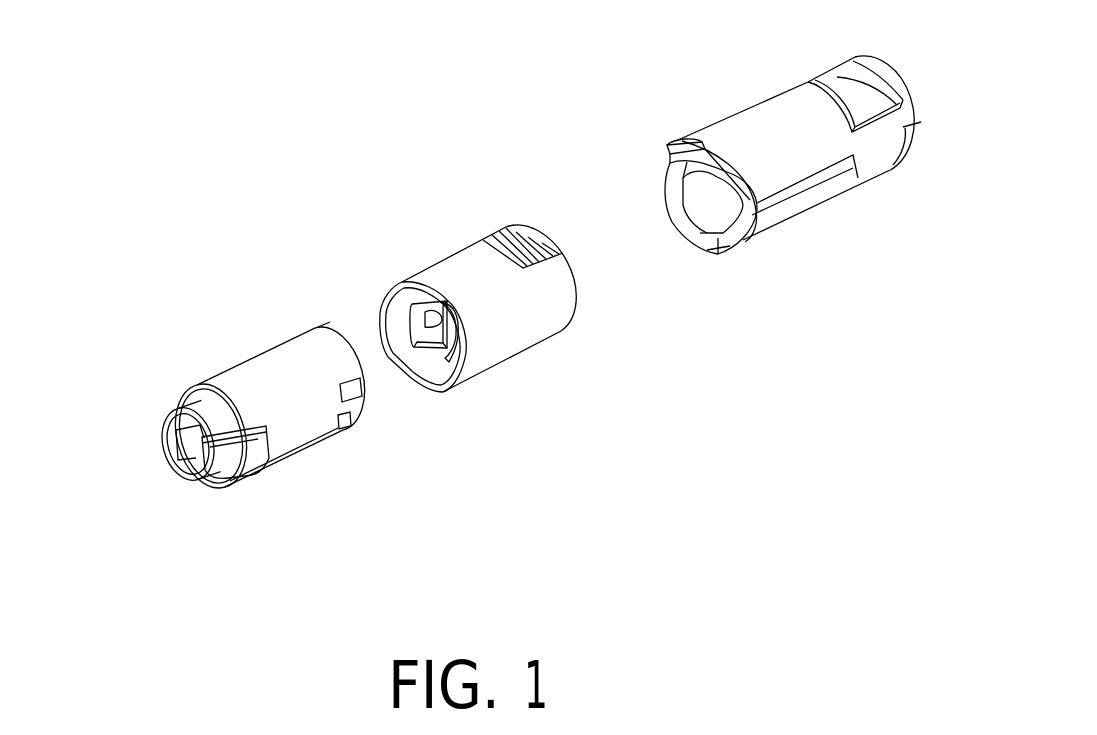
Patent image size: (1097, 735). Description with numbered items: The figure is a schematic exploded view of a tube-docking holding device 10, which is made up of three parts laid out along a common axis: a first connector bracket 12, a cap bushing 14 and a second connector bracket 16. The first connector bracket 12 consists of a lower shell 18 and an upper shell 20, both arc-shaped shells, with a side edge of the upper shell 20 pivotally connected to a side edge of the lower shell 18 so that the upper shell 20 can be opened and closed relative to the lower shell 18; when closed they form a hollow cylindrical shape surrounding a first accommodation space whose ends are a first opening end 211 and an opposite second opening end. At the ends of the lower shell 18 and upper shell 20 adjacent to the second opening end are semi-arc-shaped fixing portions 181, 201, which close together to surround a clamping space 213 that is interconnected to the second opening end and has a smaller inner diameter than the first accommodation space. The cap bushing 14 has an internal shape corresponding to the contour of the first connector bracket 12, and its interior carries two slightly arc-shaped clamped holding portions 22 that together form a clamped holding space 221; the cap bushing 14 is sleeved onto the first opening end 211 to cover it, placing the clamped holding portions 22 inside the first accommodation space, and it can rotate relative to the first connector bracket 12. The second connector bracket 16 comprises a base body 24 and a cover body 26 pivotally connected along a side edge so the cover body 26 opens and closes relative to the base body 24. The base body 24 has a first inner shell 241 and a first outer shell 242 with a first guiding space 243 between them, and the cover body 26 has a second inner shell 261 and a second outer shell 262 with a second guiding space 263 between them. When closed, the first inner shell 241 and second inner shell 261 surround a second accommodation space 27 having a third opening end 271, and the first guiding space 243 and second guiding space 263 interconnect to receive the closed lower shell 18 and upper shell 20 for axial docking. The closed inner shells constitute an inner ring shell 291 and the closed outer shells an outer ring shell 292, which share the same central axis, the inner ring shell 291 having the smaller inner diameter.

The tube-docking holding device 10 is at (166, 102).
The first connector bracket 12 is at (349, 462).
The cap bushing 14 is at (458, 277).
The second connector bracket 16 is at (889, 220).
The lower shell 18 is at (287, 457).
The fixing portion 181 is at (190, 480).
The upper shell 20 is at (272, 343).
The fixing portion 201 is at (197, 410).
The first opening end 211 is at (329, 312).
The clamping space 213 is at (162, 447).
The clamped holding portion 22 is at (450, 385).
The clamped holding space 221 is at (415, 315).
The base body 24 is at (823, 193).
The first inner shell 241 is at (662, 186).
The first outer shell 242 is at (717, 253).
The first guiding space 243 is at (747, 247).
The cover body 26 is at (777, 108).
The second inner shell 261 is at (668, 150).
The second outer shell 262 is at (710, 230).
The second guiding space 263 is at (682, 142).
The second accommodation space 27 is at (680, 228).
The third opening end 271 is at (680, 205).
The inner ring shell 291 is at (560, 42).
The outer ring shell 292 is at (793, 345).